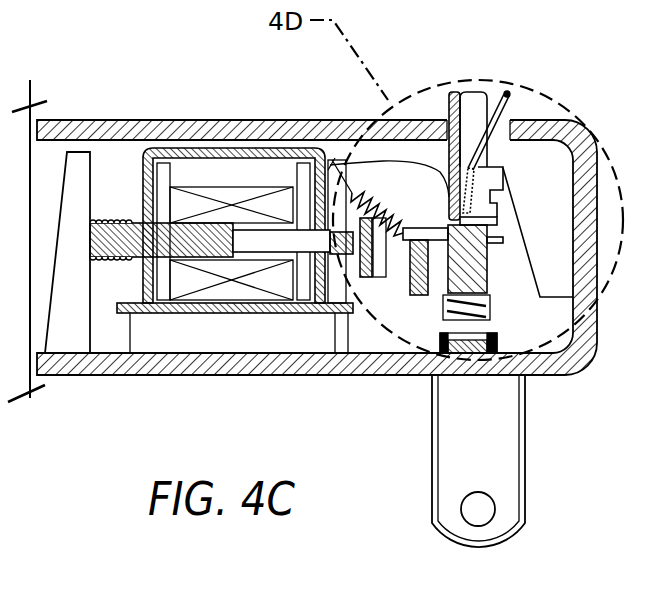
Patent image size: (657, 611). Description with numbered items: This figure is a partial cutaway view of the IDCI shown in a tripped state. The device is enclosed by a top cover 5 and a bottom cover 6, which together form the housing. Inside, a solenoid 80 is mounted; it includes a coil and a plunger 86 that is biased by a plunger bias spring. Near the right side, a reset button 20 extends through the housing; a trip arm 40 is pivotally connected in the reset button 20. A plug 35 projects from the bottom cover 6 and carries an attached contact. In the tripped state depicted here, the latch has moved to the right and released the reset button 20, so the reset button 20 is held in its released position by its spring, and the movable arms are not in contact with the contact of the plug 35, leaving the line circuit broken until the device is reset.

The top cover 5 is at (61, 119).
The bottom cover 6 is at (132, 375).
The reset button 20 is at (473, 93).
The plug 35 is at (485, 463).
The trip arm 40 is at (508, 96).
The solenoid 80 is at (212, 150).
The plunger 86 is at (125, 220).